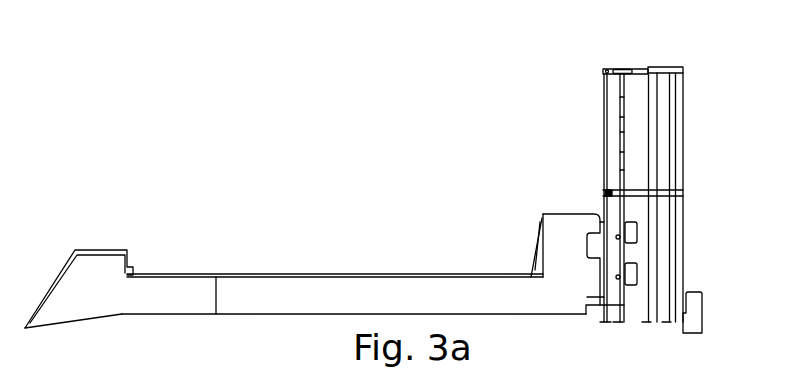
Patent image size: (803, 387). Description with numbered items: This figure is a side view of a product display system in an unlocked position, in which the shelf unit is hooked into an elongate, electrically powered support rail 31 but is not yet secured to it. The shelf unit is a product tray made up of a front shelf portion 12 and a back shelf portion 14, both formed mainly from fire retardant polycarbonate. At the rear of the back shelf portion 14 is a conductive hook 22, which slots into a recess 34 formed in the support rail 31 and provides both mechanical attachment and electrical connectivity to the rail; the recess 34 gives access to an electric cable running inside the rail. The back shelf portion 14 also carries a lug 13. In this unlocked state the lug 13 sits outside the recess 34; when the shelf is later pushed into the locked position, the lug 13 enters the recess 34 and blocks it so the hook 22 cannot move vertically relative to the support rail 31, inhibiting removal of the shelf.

The front shelf portion 12 is at (167, 275).
The back shelf portion 14 is at (318, 275).
The lug 13 is at (575, 225).
The support rail 31 is at (643, 63).
The recess 34 is at (622, 98).
The conductive hook 22 is at (638, 231).